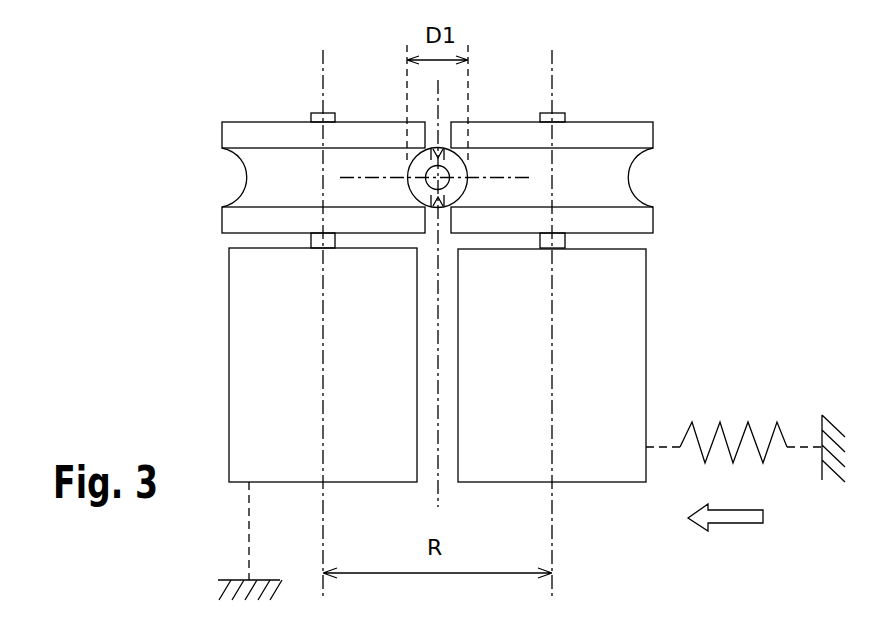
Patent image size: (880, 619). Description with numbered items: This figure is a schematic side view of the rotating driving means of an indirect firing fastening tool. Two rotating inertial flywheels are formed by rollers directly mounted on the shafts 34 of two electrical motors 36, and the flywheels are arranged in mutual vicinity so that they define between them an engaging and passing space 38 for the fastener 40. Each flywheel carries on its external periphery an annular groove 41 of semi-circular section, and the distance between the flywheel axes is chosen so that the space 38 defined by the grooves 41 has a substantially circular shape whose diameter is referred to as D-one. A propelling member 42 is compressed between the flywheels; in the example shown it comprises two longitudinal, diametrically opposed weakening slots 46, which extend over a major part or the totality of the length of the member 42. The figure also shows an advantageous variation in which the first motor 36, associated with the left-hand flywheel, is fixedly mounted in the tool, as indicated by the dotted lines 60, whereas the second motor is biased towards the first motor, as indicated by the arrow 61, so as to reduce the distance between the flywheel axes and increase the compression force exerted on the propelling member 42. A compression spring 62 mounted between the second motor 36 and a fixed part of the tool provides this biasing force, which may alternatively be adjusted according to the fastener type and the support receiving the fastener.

The shaft 34 is at (311, 242).
The electrical motor 36 is at (229, 372).
The engaging and passing space 38 is at (430, 134).
The fastener 40 is at (440, 147).
The annular groove 41 is at (244, 172).
The propelling member 42 is at (468, 162).
The weakening slots 46 is at (417, 200).
The dotted lines 60 is at (248, 515).
The arrow 61 is at (733, 514).
The compression spring 62 is at (724, 438).